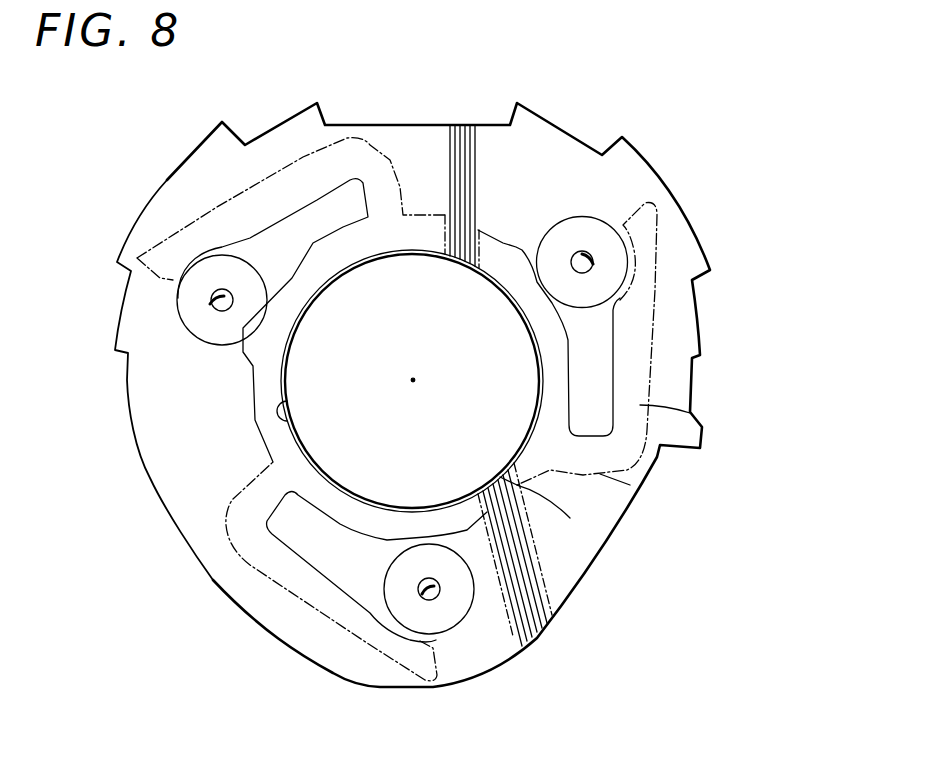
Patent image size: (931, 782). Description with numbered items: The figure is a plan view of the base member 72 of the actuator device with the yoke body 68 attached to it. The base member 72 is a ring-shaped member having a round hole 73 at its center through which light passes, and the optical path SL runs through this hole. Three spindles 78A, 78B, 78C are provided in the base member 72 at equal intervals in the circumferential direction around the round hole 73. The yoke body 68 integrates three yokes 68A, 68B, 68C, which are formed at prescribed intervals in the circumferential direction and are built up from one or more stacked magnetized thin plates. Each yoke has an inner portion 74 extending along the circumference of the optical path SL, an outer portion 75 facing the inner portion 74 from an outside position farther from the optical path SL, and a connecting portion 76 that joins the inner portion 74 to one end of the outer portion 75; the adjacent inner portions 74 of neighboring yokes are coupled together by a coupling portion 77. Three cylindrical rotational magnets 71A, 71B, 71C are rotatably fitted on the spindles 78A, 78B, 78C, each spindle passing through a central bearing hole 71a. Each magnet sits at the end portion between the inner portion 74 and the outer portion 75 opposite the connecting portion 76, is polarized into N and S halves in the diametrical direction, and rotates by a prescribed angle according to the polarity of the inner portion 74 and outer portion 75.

The yoke body 68 is at (466, 412).
The yoke 68A is at (662, 330).
The yoke 68B is at (214, 206).
The yoke 68C is at (328, 620).
The rotational magnet 71A is at (577, 215).
The rotational magnet 71B is at (188, 338).
The rotational magnet 71C is at (474, 607).
The bearing hole 71a is at (582, 251).
The base member 72 is at (489, 125).
The round hole 73 is at (294, 408).
The inner portion 74 is at (545, 408).
The outer portion 75 is at (690, 413).
The connecting portion 76 is at (630, 485).
The coupling portion 77 is at (570, 518).
The spindle 78A is at (595, 264).
The spindle 78B is at (215, 298).
The spindle 78C is at (437, 598).
The optical path SL is at (413, 378).